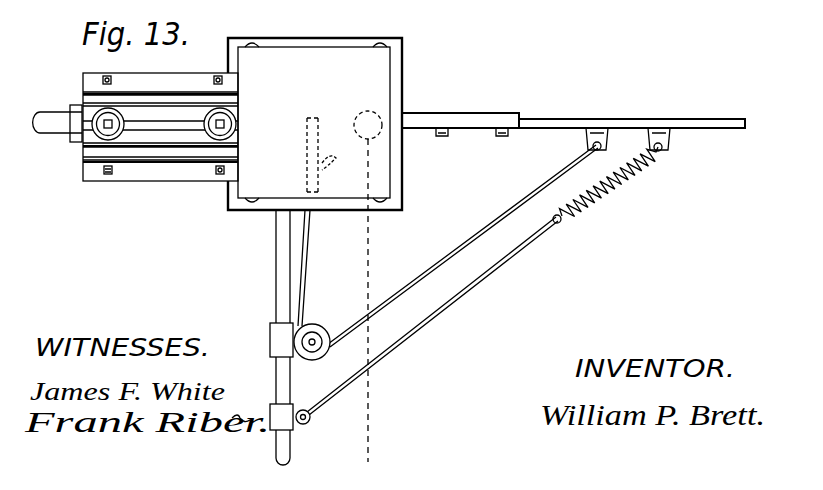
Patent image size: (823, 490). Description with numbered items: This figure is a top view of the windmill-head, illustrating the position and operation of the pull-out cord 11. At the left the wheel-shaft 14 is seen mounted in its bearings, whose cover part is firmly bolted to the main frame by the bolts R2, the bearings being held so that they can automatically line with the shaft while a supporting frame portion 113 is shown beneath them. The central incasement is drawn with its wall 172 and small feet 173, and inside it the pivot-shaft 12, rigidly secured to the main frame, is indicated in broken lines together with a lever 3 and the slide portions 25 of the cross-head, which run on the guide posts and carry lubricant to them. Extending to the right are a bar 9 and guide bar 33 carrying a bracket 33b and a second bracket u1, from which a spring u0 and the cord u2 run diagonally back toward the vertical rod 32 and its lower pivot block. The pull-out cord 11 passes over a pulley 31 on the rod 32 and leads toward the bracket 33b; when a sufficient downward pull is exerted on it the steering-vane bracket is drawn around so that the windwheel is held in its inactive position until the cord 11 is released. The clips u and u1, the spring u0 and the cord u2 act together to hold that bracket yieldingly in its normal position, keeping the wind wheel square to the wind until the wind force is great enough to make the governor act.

The wheel-shaft 14 is at (50, 120).
The bearing frame 113 is at (157, 168).
The bolts R2 is at (211, 190).
The casing wall 172 is at (326, 43).
The casing feet 173 is at (392, 29).
The pivot-shaft 12 is at (368, 112).
The slide portions 25 is at (382, 300).
The lever 3 is at (329, 162).
The bar 9 is at (478, 121).
The guide bar 33 is at (575, 113).
The bracket 33b is at (606, 144).
The bracket u1 is at (672, 144).
The spring u0 is at (605, 185).
The pull-out cord 11 is at (310, 128).
The cord u2 is at (503, 283).
The vertical rod 32 is at (278, 251).
The pulley 31 is at (296, 331).
The clip u is at (298, 404).